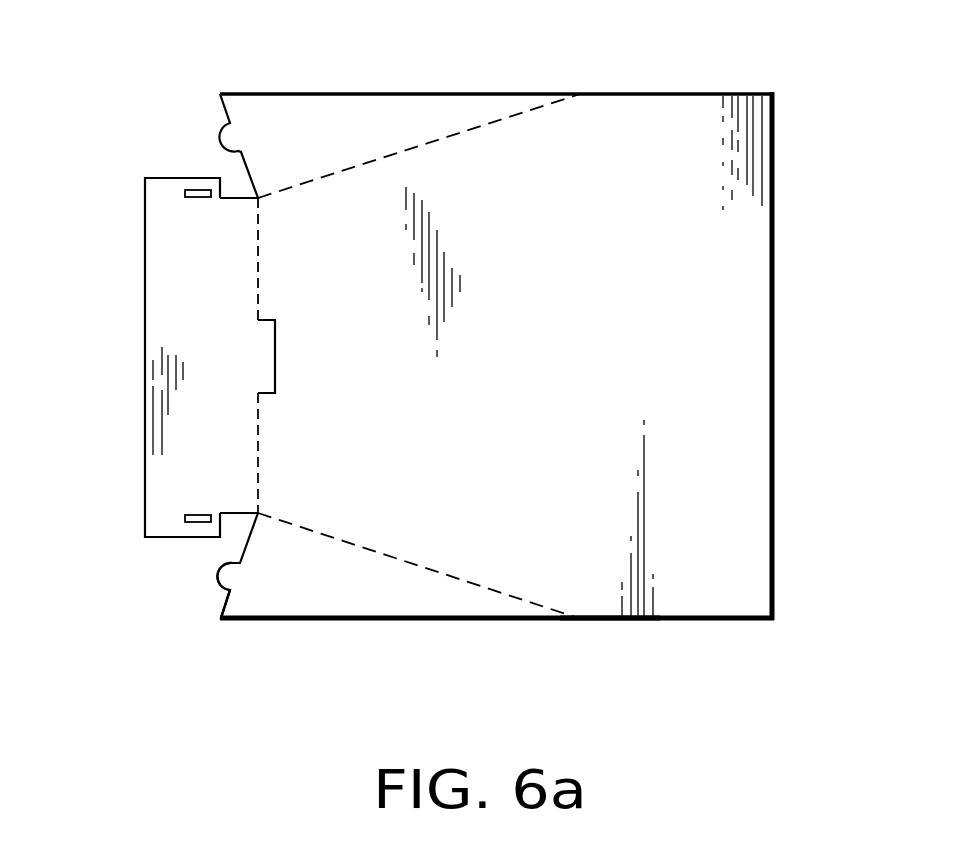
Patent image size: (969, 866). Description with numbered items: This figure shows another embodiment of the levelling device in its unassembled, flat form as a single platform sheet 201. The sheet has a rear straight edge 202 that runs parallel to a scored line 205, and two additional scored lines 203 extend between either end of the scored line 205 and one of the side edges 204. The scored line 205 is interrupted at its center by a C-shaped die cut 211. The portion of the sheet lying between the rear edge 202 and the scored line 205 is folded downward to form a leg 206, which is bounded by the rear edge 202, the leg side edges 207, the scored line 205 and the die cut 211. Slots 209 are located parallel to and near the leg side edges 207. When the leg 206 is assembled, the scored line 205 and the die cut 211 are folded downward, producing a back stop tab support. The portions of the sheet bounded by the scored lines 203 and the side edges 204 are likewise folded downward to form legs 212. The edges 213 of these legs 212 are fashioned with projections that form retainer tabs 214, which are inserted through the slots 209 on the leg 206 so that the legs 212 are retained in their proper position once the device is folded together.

The platform sheet 201 is at (729, 232).
The rear straight edge 202 is at (145, 392).
The scored lines 203 is at (372, 162).
The side edges 204 is at (608, 622).
The scored line 205 is at (258, 252).
The leg 206 is at (158, 527).
The leg side edges 207 is at (192, 541).
The slots 209 is at (193, 192).
The die cut 211 is at (277, 358).
The legs 212 is at (285, 582).
The edges 213 is at (222, 607).
The retainer tabs 214 is at (220, 578).